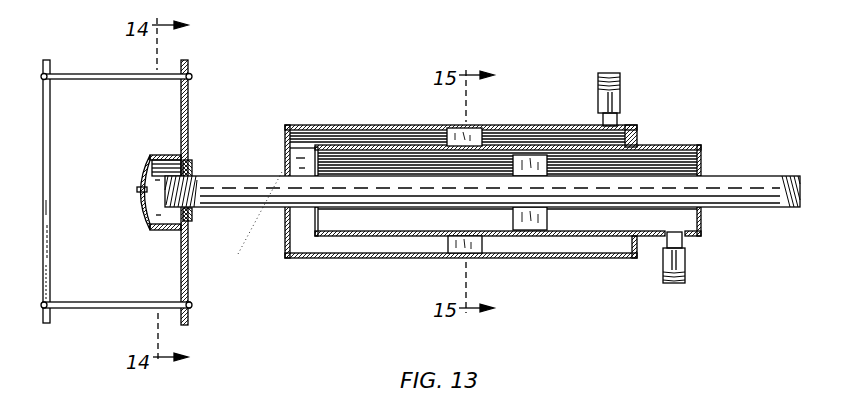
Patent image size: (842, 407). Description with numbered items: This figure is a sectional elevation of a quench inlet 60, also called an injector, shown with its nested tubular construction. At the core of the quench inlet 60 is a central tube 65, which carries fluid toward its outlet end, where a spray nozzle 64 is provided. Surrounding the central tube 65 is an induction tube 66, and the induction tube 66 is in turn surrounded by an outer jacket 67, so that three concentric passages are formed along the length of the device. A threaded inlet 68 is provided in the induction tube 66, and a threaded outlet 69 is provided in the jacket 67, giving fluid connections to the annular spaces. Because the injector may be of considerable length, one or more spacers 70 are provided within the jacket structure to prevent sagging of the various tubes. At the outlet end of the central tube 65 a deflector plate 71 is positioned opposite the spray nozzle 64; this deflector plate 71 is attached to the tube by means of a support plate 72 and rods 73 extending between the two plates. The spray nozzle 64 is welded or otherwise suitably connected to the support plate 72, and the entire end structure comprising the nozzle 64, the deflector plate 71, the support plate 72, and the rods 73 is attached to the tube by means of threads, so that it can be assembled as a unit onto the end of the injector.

The quench inlet 60 is at (507, 174).
The spray nozzle 64 is at (163, 153).
The central tube 65 is at (237, 208).
The induction tube 66 is at (678, 145).
The jacket 67 is at (331, 125).
The threaded inlet 68 is at (685, 260).
The threaded outlet 69 is at (620, 97).
The spacers 70 is at (522, 157).
The deflector plate 71 is at (50, 172).
The support plate 72 is at (188, 107).
The rods 73 is at (100, 78).